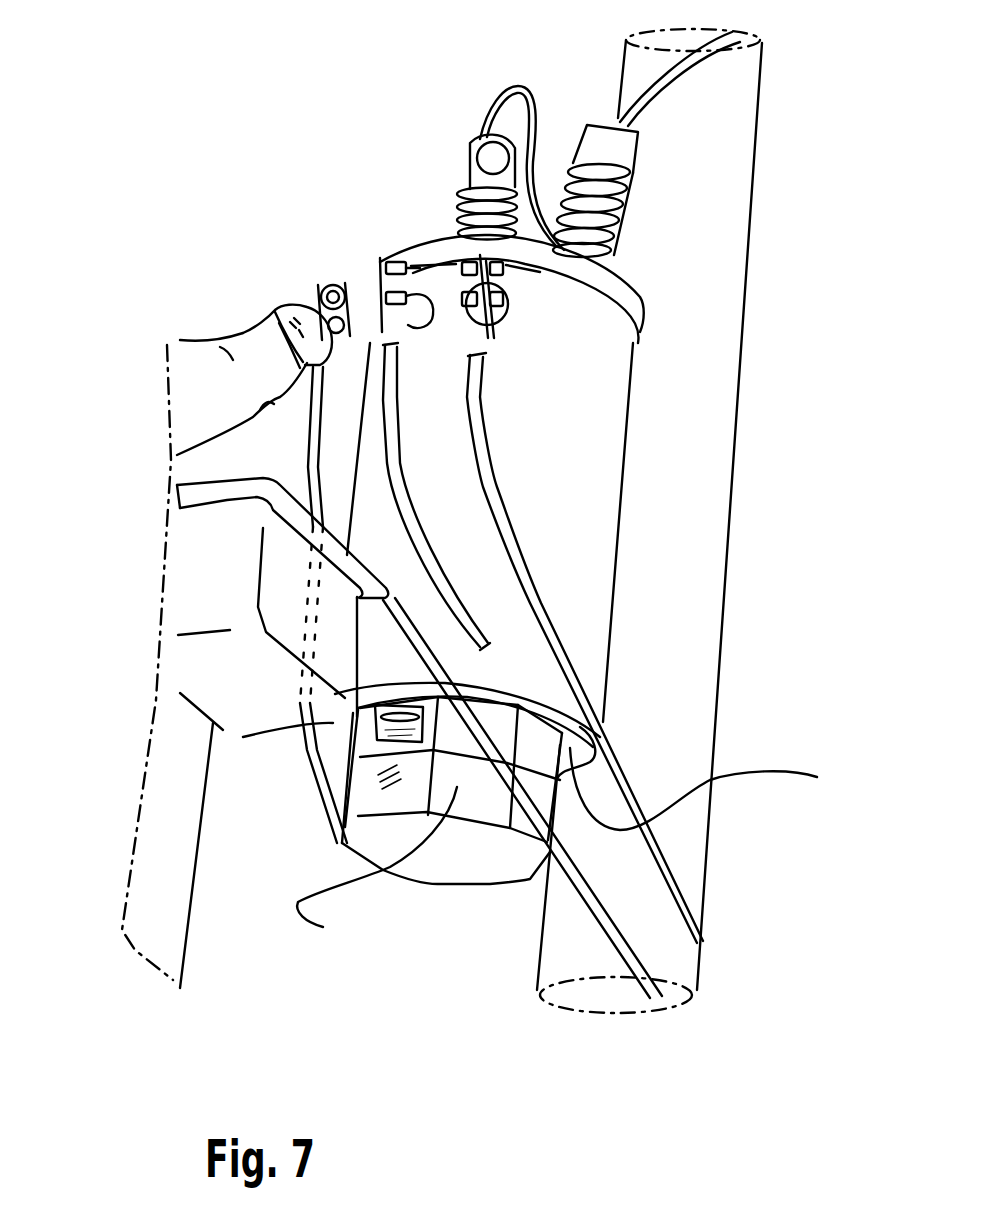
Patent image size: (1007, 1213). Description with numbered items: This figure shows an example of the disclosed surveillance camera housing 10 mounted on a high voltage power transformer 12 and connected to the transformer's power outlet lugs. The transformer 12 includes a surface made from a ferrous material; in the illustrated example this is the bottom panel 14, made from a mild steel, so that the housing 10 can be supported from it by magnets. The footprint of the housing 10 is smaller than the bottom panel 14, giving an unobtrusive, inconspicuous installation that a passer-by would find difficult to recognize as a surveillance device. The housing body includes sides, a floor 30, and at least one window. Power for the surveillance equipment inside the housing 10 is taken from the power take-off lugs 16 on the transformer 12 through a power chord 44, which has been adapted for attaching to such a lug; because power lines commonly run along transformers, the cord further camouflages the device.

The surveillance camera housing 10 is at (340, 840).
The transformer 12 is at (571, 452).
The bottom panel 14 is at (668, 648).
The power take-off lugs 16 is at (388, 262).
The floor 30 is at (494, 866).
The power chord 44 is at (362, 300).